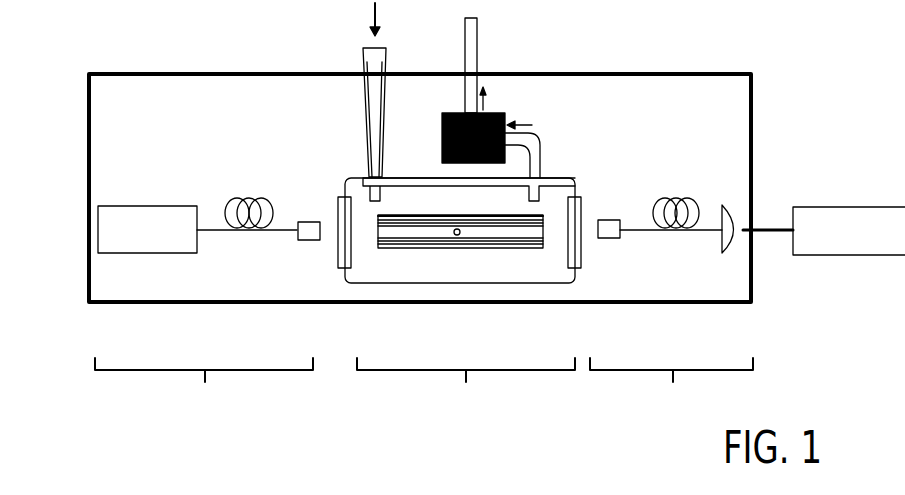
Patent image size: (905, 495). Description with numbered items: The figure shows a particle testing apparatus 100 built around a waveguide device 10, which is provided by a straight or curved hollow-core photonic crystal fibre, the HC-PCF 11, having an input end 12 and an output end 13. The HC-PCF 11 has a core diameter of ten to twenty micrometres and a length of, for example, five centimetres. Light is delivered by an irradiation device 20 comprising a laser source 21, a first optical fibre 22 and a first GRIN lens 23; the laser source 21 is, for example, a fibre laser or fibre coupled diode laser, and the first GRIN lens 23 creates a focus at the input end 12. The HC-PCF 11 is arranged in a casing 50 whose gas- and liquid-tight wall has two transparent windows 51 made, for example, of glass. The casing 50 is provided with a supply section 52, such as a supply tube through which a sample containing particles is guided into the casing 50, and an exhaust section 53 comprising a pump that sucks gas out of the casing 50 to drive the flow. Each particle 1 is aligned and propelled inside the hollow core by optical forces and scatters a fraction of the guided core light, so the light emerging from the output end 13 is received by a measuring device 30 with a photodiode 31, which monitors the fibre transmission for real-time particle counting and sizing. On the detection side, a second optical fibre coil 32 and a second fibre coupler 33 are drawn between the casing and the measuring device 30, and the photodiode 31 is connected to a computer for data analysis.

The particle testing apparatus 100 is at (176, 72).
The particle 1 is at (454, 234).
The waveguide device 10 is at (469, 421).
The HC-PCF 11 is at (542, 216).
The input end 12 is at (378, 228).
The output end 13 is at (545, 242).
The irradiation device 20 is at (219, 421).
The laser source 21 is at (112, 219).
The first optical fibre 22 is at (240, 203).
The first GRIN lens 23 is at (298, 231).
The measuring device 30 is at (688, 421).
The photodiode 31 is at (724, 244).
The optical fiber coil 32 is at (667, 205).
The fiber coupler / collimator 33 is at (601, 227).
The casing 50 is at (385, 281).
The transparent windows 51 is at (338, 205).
The supply section 52 is at (372, 60).
The exhaust section 53 is at (488, 113).